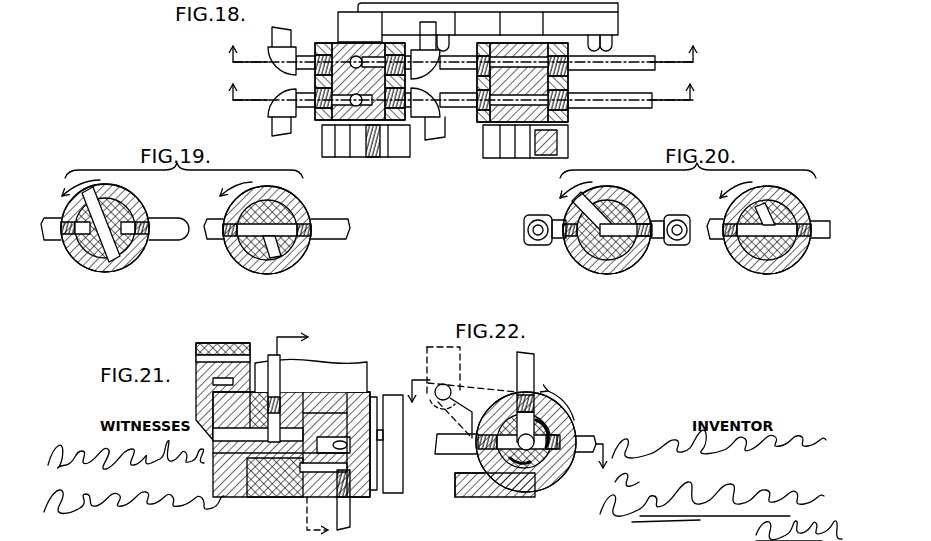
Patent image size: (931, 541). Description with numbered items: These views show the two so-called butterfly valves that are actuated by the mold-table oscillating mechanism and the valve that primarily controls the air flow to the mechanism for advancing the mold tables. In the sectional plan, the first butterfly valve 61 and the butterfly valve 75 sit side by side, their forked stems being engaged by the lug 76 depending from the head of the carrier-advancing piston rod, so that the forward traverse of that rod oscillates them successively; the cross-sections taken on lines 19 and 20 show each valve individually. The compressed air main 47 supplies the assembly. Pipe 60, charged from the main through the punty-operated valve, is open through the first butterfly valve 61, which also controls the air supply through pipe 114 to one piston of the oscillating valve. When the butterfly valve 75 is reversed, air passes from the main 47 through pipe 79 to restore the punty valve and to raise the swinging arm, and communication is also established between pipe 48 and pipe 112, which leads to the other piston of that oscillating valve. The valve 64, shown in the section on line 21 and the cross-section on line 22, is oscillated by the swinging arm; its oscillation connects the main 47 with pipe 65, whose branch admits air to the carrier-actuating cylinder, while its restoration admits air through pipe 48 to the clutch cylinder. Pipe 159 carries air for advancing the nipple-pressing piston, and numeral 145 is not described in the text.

In FIG. 18, the section line 19- 19 is at (463, 51).
In FIG. 18, the section line 20- 20 is at (461, 90).
In FIG. 22, the section line 21- 21 is at (499, 421).
In FIG. 21, the section line 22- 22 is at (297, 425).
In FIG. 18, the compressed air main 47 is at (619, 108).
In FIG. 20, the compressed air main 47 is at (680, 219).
In FIG. 21, the compressed air main 47 is at (272, 498).
In FIG. 22, the compressed air main 47 is at (534, 372).
In FIG. 18, the pipe 48 is at (280, 38).
In FIG. 19, the pipe 48 is at (56, 241).
In FIG. 21, the pipe 48 is at (350, 521).
In FIG. 22, the pipe 48 is at (576, 438).
In FIG. 18, the pipe 60 is at (457, 56).
In FIG. 19, the pipe 60 is at (218, 241).
In FIG. 18, the first butterfly valve 61 is at (528, 28).
In FIG. 19, the first butterfly valve 61 is at (267, 242).
In FIG. 20, the first butterfly valve 61 is at (787, 275).
In FIG. 21, the valve 64 is at (311, 375).
In FIG. 21, the pipe 65 is at (282, 356).
In FIG. 22, the pipe 65 is at (456, 447).
In FIG. 18, the butterfly valve 75 is at (343, 48).
In FIG. 19, the butterfly valve 75 is at (105, 241).
In FIG. 20, the butterfly valve 75 is at (630, 273).
In FIG. 18, the lug 76 is at (546, 156).
In FIG. 18, the pipe 79 is at (272, 126).
In FIG. 20, the pipe 79 is at (530, 220).
In FIG. 18, the pipe 112 is at (428, 28).
In FIG. 19, the pipe 112 is at (166, 241).
In FIG. 18, the pipe 114 is at (463, 96).
In FIG. 20, the pipe 114 is at (719, 243).
In FIG. 18, the part 145 is at (137, 13).
In FIG. 18, the pipe 159 is at (81, 13).